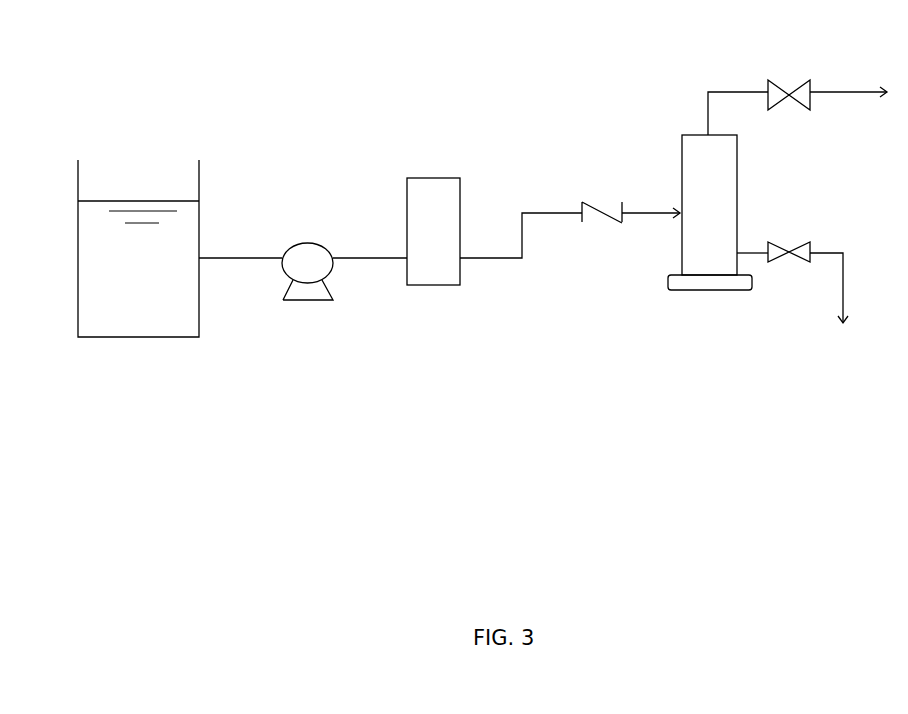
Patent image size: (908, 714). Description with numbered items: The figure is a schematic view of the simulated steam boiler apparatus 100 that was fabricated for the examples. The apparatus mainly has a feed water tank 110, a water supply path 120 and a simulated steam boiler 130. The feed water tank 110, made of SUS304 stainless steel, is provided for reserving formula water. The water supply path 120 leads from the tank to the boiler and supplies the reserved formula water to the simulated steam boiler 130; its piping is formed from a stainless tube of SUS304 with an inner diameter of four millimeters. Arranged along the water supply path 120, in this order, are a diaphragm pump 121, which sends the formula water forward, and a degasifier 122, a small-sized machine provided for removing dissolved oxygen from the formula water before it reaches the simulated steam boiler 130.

The simulated steam boiler apparatus 100 is at (413, 148).
The feed water tank 110 is at (157, 337).
The water supply path 120 is at (528, 237).
The diaphragm pump 121 is at (302, 292).
The degasifier 122 is at (437, 285).
The simulated steam boiler 130 is at (738, 188).